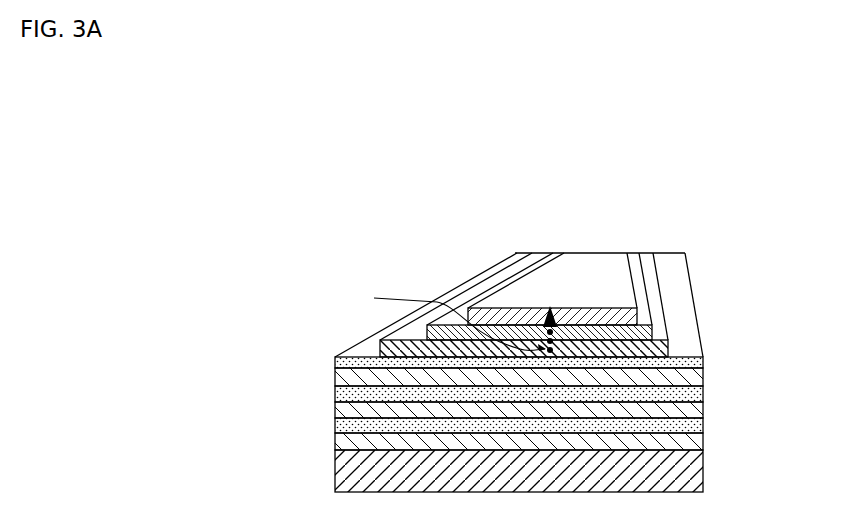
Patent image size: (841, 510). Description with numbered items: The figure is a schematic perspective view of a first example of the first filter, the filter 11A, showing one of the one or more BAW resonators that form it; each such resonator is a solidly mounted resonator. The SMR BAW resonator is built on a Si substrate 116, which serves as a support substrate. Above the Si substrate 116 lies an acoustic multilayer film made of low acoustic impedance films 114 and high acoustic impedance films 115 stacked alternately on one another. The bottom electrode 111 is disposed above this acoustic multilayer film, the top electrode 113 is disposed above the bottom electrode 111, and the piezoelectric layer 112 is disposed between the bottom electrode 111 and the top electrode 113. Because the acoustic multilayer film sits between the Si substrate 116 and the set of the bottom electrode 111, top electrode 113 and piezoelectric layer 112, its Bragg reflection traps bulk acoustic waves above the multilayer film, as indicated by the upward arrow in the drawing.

The filter 11A is at (453, 337).
The bottom electrode 111 is at (668, 352).
The piezoelectric layer 112 is at (652, 335).
The top electrode 113 is at (637, 317).
The low acoustic impedance films 114 is at (695, 428).
The high acoustic impedance films 115 is at (335, 378).
The Si substrate 116 is at (690, 478).